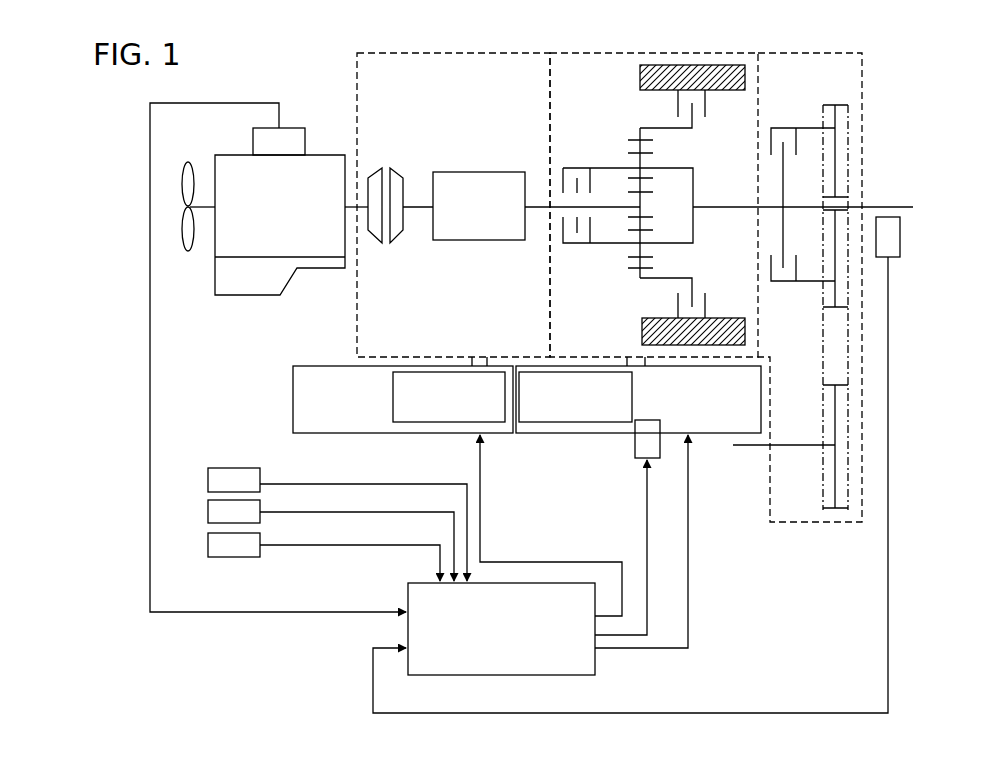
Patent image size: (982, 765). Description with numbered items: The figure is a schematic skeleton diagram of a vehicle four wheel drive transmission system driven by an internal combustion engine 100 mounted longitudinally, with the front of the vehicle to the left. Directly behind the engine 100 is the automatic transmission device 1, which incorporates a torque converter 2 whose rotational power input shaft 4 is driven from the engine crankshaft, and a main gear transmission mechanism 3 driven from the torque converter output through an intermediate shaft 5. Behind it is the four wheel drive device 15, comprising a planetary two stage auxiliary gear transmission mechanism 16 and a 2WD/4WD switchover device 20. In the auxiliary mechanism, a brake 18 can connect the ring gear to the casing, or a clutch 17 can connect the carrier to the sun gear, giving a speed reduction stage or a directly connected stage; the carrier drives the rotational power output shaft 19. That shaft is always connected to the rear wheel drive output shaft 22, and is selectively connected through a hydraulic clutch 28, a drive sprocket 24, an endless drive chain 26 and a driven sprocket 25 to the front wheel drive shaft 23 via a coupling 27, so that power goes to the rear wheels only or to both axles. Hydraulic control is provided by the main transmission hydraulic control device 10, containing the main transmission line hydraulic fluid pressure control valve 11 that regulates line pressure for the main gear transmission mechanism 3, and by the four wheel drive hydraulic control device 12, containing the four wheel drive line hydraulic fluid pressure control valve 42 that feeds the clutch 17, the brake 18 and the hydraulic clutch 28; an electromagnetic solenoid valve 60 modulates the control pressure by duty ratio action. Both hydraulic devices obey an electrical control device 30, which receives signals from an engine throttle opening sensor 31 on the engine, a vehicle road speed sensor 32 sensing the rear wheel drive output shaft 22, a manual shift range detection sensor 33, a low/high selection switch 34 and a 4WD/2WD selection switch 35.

The automatic transmission device 1 is at (384, 52).
The torque converter 2 is at (395, 170).
The main gear transmission mechanism 3 is at (464, 171).
The rotational power input shaft 4 is at (360, 209).
The output shaft of main transmission 5 is at (537, 210).
The main transmission hydraulic control device 10 is at (292, 399).
The main transmission line hydraulic fluid pressure control valve 11 is at (493, 425).
The four wheel drive hydraulic control device 12 is at (711, 435).
The four wheel drive device 15 is at (591, 52).
The two stage auxiliary gear transmission mechanism 16 is at (621, 153).
The clutch 17 is at (578, 240).
The brake 18 is at (705, 110).
The rotational power output shaft 19 is at (725, 206).
The 2WD/4WD switchover device 20 is at (801, 52).
The rear wheel drive output shaft 22 is at (898, 207).
The front wheel drive shaft 23 is at (745, 447).
The drive sprocket 24 is at (836, 160).
The driven sprocket 25 is at (838, 475).
The endless drive chain 26 is at (849, 343).
The coupling 27 is at (850, 187).
The hydraulic clutch 28 is at (790, 140).
The electrical control device 30 is at (600, 667).
The engine throttle opening sensor 31 is at (291, 141).
The vehicle road speed sensor 32 is at (900, 237).
The manual shift range detection sensor 33 is at (212, 483).
The low/high selection switch 34 is at (212, 512).
The 4WD/2WD selection switch 35 is at (212, 545).
The four wheel drive line hydraulic fluid pressure control valve 42 is at (572, 422).
The electromagnetic solenoid valve 60 is at (635, 445).
The internal combustion engine 100 is at (324, 152).